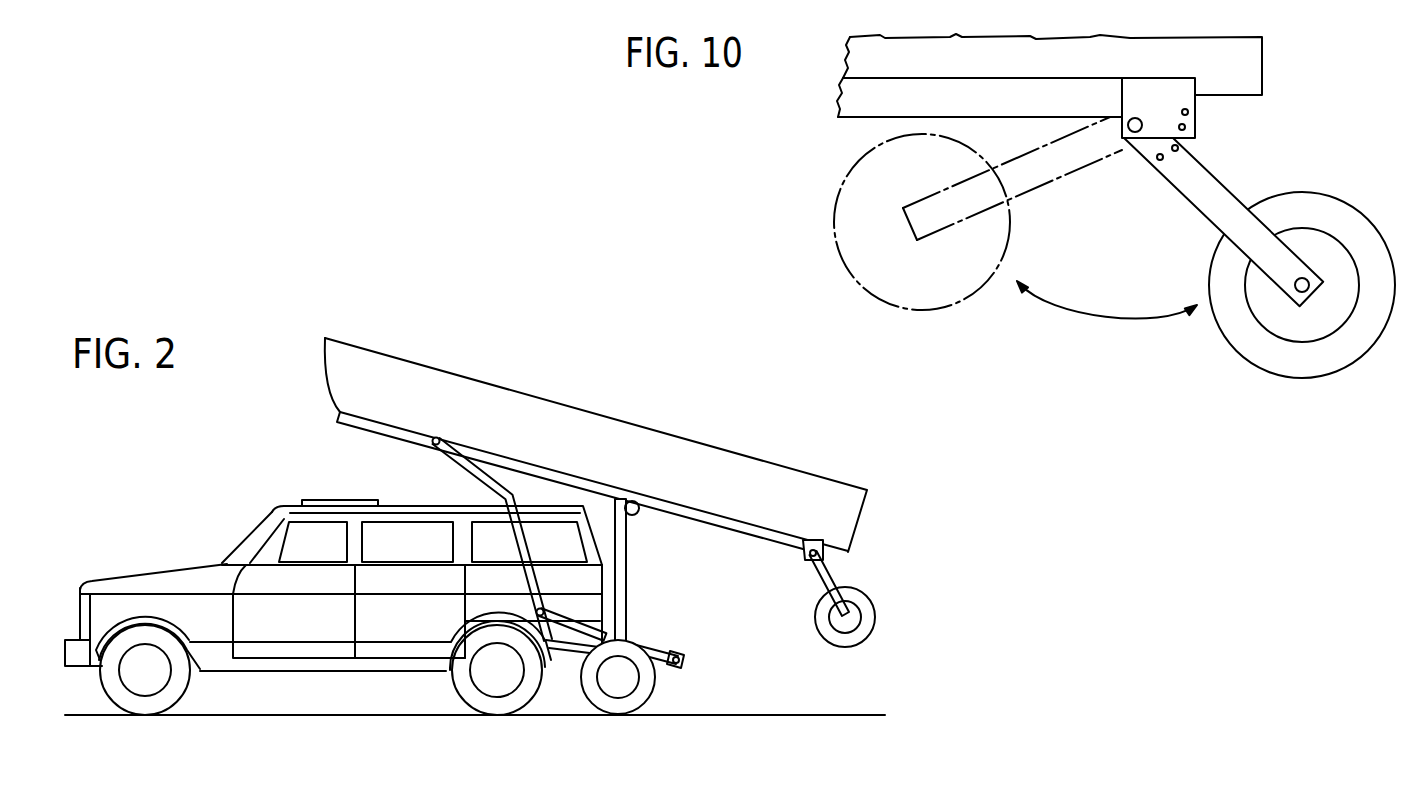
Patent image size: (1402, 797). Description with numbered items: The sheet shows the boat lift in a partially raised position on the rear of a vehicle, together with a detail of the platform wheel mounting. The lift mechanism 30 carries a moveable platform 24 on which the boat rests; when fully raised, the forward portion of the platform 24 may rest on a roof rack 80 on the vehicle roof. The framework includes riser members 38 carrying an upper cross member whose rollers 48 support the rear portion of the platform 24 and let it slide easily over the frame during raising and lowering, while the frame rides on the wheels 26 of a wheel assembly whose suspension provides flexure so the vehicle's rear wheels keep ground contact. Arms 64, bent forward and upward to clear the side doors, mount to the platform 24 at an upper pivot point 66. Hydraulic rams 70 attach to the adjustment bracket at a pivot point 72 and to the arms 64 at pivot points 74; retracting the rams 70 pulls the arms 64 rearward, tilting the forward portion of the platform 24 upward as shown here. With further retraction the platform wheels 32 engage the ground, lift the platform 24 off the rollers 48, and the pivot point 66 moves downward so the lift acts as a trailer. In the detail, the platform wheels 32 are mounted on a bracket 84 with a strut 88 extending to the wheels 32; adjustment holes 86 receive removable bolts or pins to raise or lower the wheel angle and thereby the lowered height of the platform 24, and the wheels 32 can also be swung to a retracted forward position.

In FIG. 2, the platform 24 is at (372, 432).
In FIG. 10, the platform 24 is at (1035, 88).
In FIG. 2, the wheels 26 is at (640, 704).
In FIG. 2, the lift mechanism 30 is at (562, 662).
In FIG. 2, the platform wheels 32 is at (877, 617).
In FIG. 10, the platform wheels 32 is at (1342, 210).
In FIG. 2, the riser members 38 is at (626, 550).
In FIG. 2, the rollers 48 is at (639, 503).
In FIG. 2, the arms 64 is at (467, 472).
In FIG. 2, the upper pivot point 66 is at (432, 448).
In FIG. 2, the hydraulic rams 70 is at (601, 634).
In FIG. 2, the pivot point 72 is at (682, 652).
In FIG. 2, the pivot points 74 is at (541, 606).
In FIG. 2, the roof rack 80 is at (313, 499).
In FIG. 10, the bracket 84 is at (1183, 83).
In FIG. 10, the adjustment holes 86 is at (1170, 157).
In FIG. 10, the strut 88 is at (1198, 204).